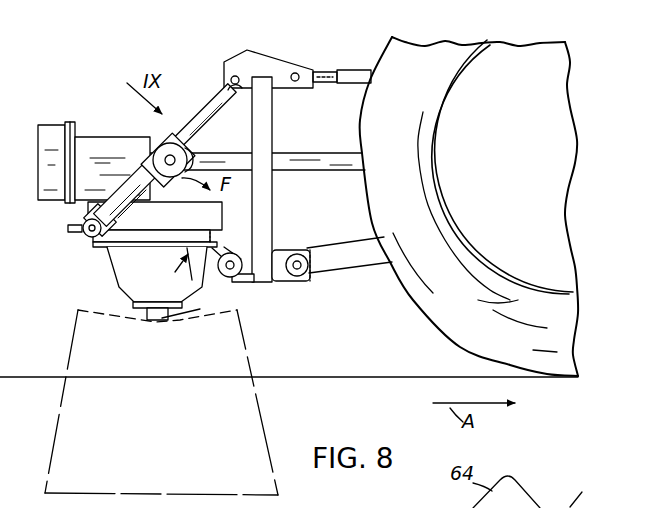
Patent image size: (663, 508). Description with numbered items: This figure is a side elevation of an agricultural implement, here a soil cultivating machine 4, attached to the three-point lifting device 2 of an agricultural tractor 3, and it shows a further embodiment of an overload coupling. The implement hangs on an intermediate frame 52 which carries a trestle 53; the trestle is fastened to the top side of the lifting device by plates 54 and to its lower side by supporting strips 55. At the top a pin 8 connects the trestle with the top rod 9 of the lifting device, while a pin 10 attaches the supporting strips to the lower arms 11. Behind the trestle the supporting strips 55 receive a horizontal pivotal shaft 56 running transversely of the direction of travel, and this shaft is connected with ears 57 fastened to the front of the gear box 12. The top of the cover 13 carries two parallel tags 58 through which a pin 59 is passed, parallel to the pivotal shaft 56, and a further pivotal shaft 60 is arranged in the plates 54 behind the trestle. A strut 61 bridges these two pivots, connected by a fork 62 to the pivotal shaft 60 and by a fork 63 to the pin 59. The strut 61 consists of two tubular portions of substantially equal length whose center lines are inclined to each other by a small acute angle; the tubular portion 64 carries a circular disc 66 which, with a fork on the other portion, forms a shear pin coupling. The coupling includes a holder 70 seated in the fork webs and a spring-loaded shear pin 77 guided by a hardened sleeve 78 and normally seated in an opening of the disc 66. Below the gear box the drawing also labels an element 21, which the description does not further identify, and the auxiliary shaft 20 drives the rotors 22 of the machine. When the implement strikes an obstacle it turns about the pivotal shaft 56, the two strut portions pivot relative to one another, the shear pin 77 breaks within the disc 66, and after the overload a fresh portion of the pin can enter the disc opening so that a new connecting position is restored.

The three-point lifting device 2 is at (366, 273).
The agricultural tractor 3 is at (421, 315).
The soil cultivating machine 4 is at (269, 426).
The pin 8 is at (300, 73).
The top rod 9 is at (356, 70).
The pin 10 is at (296, 251).
The lower arms 11 is at (348, 246).
The gear box 12 is at (115, 268).
The cover 13 is at (165, 237).
The auxiliary shaft 20 is at (345, 143).
The outlet 21 is at (153, 328).
The rotors 22 is at (127, 319).
The intermediate frame 52 is at (275, 140).
The trestle 53 is at (263, 187).
The plates 54 is at (276, 62).
The supporting strips 55 is at (282, 283).
The pivotal shaft 56 is at (226, 279).
The ears 57 is at (199, 281).
The tags 58 is at (90, 248).
The pin 59 is at (68, 229).
The pivotal shaft 60 is at (235, 75).
The strut 61 is at (209, 104).
The fork 62 is at (226, 93).
The fork 63 is at (96, 200).
The tubular portion 64 is at (226, 103).
The circular disc 66 is at (172, 143).
The holder 70 is at (124, 233).
The shear pin 77 is at (93, 137).
The sleeve 78 is at (50, 130).